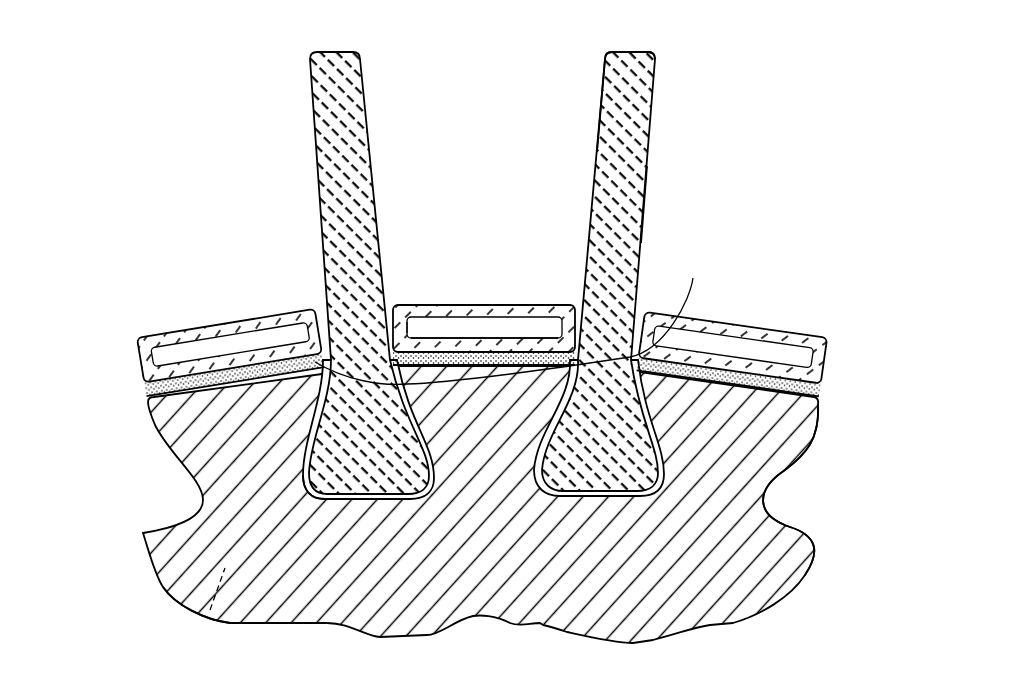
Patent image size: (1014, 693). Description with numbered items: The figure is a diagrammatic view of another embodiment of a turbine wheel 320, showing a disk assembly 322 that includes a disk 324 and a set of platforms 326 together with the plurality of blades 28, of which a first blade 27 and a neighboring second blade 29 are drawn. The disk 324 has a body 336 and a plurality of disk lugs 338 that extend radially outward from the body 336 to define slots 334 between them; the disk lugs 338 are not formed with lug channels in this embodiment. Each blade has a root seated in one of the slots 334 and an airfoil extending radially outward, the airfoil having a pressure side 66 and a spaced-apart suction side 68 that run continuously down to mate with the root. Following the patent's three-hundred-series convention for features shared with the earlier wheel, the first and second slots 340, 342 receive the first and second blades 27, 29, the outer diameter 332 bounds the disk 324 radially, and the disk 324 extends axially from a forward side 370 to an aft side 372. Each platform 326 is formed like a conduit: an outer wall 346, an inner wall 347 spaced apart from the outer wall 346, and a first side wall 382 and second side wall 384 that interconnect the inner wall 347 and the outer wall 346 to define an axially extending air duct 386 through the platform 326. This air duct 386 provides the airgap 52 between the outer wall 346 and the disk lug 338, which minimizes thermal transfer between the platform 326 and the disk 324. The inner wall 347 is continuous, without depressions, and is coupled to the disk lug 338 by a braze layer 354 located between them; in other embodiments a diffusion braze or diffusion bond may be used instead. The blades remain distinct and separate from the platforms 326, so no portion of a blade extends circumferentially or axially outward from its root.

The turbine wheel 320 is at (110, 160).
The first blade 27 is at (338, 368).
The plurality of blades 28 is at (627, 371).
The second blade 29 is at (653, 120).
The suction side 68 is at (597, 152).
The pressure side 66 is at (641, 243).
The platforms 326 is at (476, 261).
The outer wall 346 is at (505, 305).
The second side wall 384 is at (547, 330).
The first side wall 382 is at (418, 326).
The air duct 386 is at (481, 329).
The inner wall 347 is at (315, 362).
The braze layer 354 is at (652, 345).
The disk assembly 322 is at (235, 315).
The airgap 52 is at (219, 349).
The right pad 332 is at (617, 323).
The disk lugs 338 is at (817, 428).
The disk 324 is at (157, 520).
The body 336 is at (753, 545).
The body bottom portion 370 is at (183, 590).
The hidden edge 372 is at (210, 610).
The slots 334 is at (305, 490).
The left anchor bulb 340 is at (432, 488).
The right anchor bulb 342 is at (662, 484).